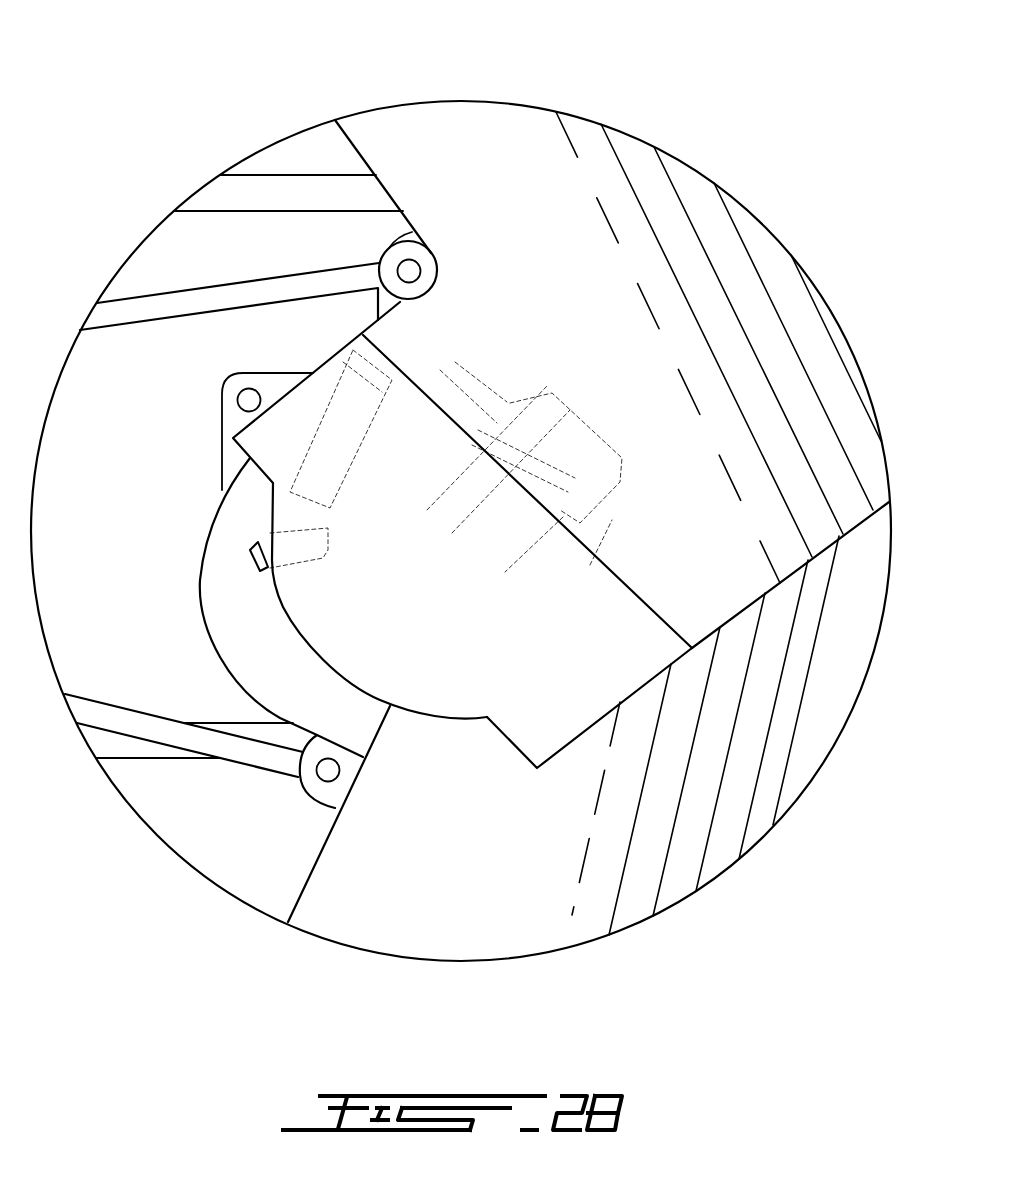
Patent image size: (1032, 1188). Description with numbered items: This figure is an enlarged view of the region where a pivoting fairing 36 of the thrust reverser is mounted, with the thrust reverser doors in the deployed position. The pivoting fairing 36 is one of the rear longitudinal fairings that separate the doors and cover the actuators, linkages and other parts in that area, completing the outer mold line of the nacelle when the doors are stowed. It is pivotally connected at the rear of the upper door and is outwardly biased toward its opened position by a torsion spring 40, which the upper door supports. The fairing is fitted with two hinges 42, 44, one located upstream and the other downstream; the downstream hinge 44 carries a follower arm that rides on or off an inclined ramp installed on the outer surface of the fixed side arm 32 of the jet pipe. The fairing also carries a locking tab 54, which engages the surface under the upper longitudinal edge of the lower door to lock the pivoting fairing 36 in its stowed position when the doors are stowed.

The side arm 32 is at (310, 257).
The pivoting fairing 36 is at (582, 687).
The torsion spring 40 is at (433, 500).
The hinge 42 is at (340, 438).
The hinge 44 is at (470, 655).
The locking tab 54 is at (266, 550).